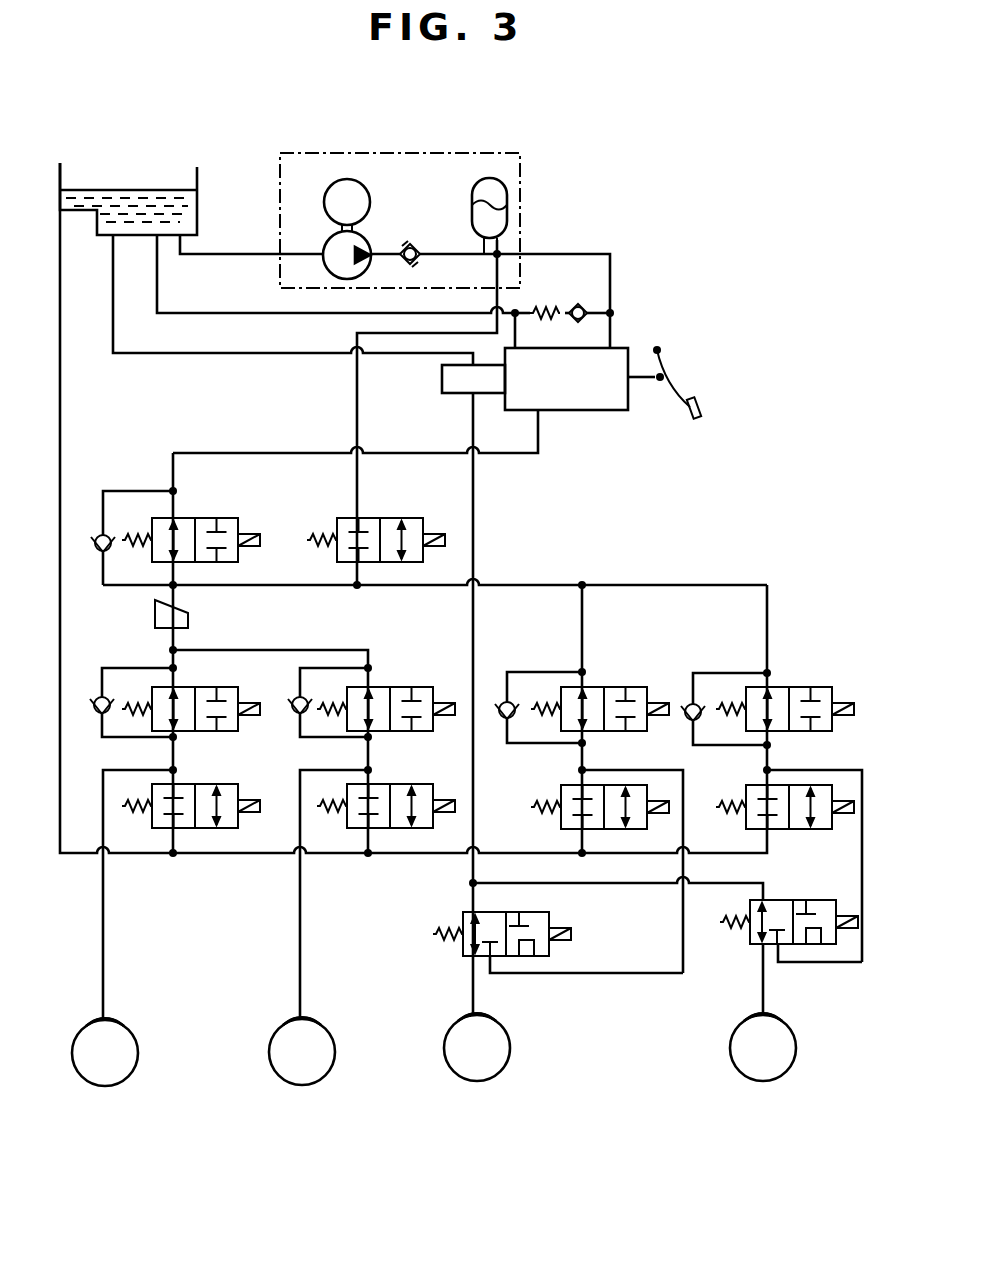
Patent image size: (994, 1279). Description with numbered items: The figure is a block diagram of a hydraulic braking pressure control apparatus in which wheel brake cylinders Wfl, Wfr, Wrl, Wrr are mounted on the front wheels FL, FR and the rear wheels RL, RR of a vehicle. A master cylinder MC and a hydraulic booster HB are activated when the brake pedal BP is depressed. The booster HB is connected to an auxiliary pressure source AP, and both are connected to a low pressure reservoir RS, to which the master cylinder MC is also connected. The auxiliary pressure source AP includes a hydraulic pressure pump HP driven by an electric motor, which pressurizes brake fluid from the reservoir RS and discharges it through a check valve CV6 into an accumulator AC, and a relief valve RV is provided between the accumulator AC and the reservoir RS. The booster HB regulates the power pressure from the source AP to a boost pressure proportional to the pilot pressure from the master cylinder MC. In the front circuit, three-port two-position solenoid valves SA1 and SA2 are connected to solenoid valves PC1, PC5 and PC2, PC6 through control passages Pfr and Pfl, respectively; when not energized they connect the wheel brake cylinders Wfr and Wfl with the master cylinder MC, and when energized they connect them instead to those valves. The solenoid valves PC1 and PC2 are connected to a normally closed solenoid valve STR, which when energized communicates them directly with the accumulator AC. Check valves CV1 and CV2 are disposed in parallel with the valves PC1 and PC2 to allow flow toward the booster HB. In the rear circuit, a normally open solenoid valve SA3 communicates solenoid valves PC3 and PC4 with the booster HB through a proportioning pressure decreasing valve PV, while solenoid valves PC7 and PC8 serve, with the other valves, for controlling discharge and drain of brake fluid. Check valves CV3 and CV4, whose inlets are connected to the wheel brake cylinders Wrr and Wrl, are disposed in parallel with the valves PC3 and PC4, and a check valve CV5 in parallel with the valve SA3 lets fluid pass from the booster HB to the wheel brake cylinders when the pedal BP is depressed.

The low pressure reservoir RS is at (198, 176).
The hydraulic pressure pump HP is at (326, 246).
The check valve CV6 is at (406, 247).
The accumulator AC is at (474, 184).
The auxiliary pressure source AP is at (520, 207).
The relief valve RV is at (552, 305).
The master cylinder MC is at (450, 378).
The hydraulic booster HB is at (566, 379).
The brake pedal BP is at (696, 402).
The check valve CV5 is at (101, 533).
The solenoid valve SA3 is at (183, 518).
The solenoid valve STR is at (367, 518).
The proportioning pressure decreasing valve PV is at (190, 618).
The check valve CV4 is at (97, 698).
The solenoid valve PC4 is at (205, 687).
The check valve CV3 is at (296, 715).
The solenoid valve PC3 is at (388, 687).
The check valve CV2 is at (503, 700).
The solenoid valve PC2 is at (595, 687).
The check valve CV1 is at (690, 702).
The solenoid valve PC1 is at (775, 687).
The solenoid valve PC8 is at (200, 784).
The solenoid valve PC7 is at (383, 784).
The solenoid valve PC6 is at (567, 785).
The solenoid valve PC5 is at (760, 785).
The solenoid valve SA2 is at (535, 912).
The solenoid valve SA1 is at (769, 900).
The control passage Pfl is at (652, 975).
The control passage Pfr is at (823, 963).
The rear left wheel RL is at (105, 1052).
The rear right wheel RR is at (302, 1051).
The front left wheel FL is at (477, 1047).
The front right wheel FR is at (763, 1047).
The wheel brake cylinder Wrl is at (121, 1018).
The wheel brake cylinder Wrr is at (306, 1012).
The wheel brake cylinder Wfl is at (497, 1018).
The wheel brake cylinder Wfr is at (792, 1016).